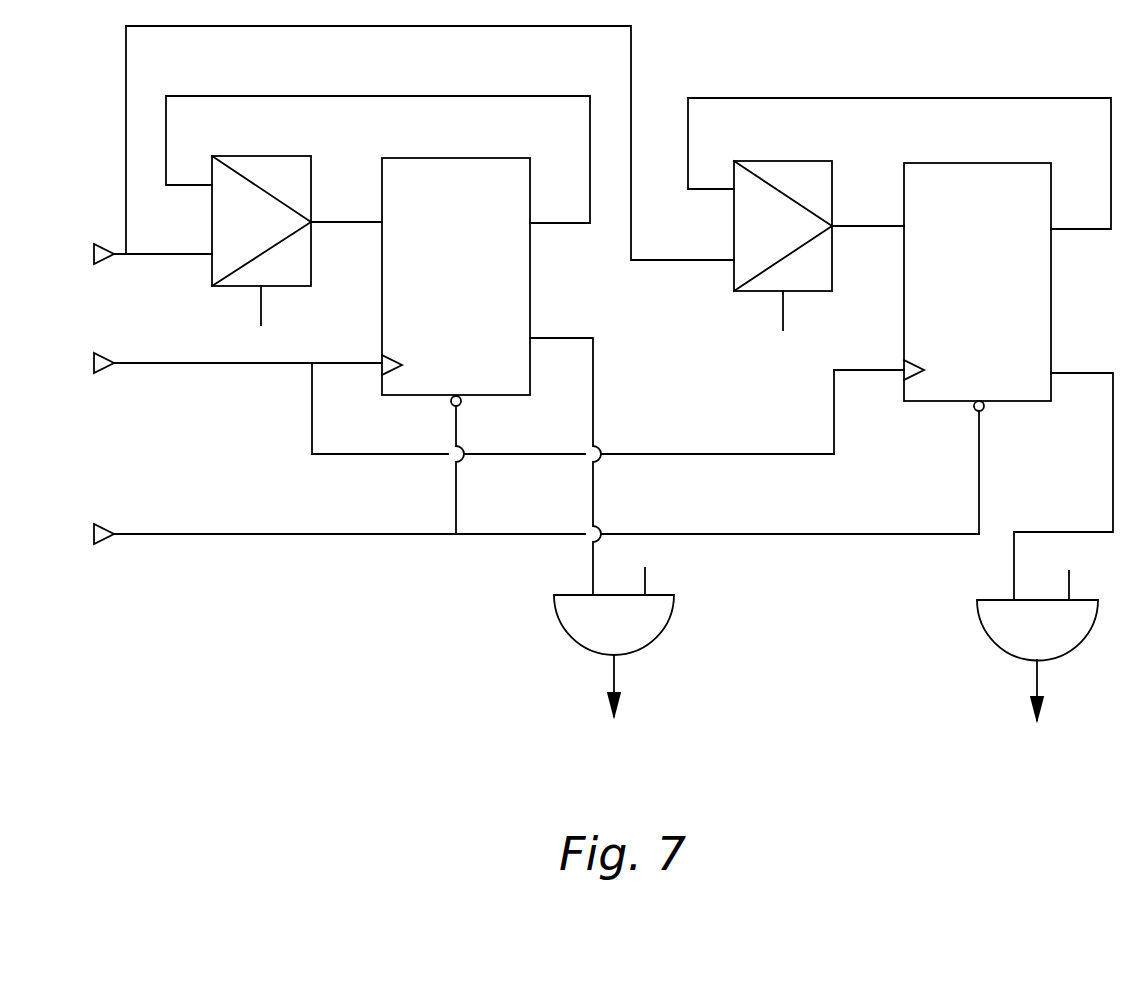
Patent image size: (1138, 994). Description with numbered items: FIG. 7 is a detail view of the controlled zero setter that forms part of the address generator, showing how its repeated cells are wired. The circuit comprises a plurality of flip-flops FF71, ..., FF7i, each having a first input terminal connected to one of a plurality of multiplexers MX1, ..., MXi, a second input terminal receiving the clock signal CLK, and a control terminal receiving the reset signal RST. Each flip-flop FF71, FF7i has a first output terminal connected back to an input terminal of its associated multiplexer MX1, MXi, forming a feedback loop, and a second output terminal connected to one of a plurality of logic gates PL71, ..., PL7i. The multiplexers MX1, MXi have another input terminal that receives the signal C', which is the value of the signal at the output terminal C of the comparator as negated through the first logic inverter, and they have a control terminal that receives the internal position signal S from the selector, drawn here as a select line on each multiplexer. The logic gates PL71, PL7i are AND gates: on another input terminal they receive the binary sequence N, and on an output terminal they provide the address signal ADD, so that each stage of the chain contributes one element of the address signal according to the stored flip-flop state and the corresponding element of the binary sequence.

The multiplexer MX1 is at (290, 168).
The multiplexer MXi is at (812, 173).
The flip-flop FF71 is at (491, 376).
The flip-flop FF7i is at (1008, 381).
The logic gate PL7i is at (583, 655).
The logic gate PL71 is at (1007, 660).
The output terminal of the comparator C is at (153, 267).
The clock signal CLK is at (509, 403).
The reset signal RST is at (536, 549).